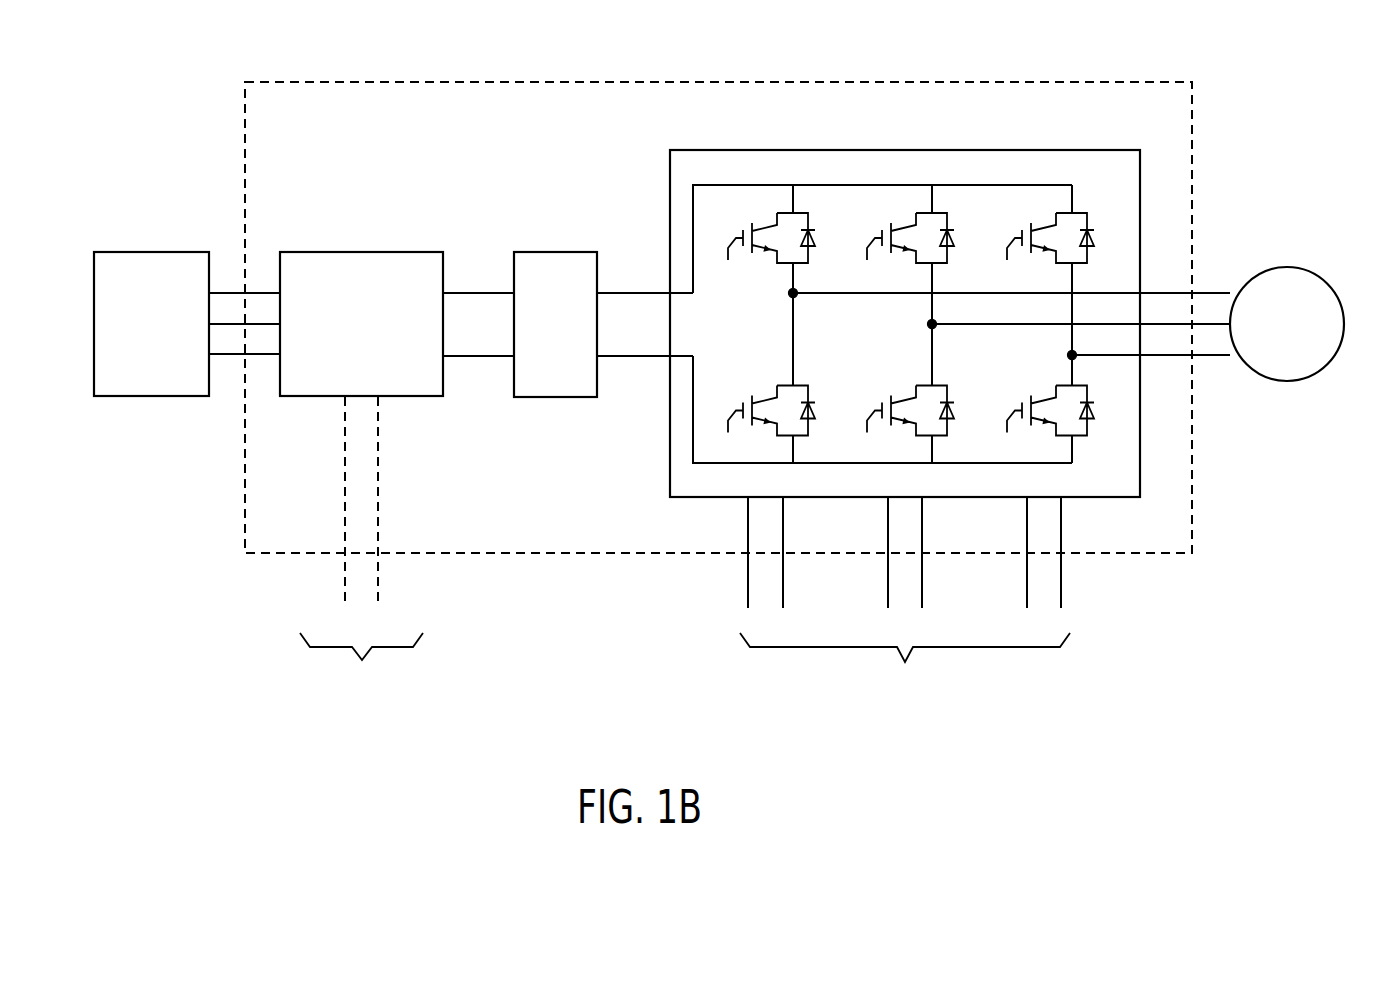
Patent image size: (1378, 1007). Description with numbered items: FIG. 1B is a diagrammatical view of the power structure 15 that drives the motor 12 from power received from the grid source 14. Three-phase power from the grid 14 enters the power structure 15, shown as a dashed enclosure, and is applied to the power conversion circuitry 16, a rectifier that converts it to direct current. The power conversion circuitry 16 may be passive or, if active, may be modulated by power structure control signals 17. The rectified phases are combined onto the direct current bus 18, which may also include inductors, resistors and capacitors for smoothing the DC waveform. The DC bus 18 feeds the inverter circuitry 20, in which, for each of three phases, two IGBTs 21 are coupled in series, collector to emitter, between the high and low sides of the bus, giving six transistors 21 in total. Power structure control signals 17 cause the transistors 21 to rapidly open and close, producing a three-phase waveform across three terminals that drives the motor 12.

The motor 12 is at (1288, 267).
The grid source 14 is at (149, 252).
The power structure 15 is at (1041, 56).
The power conversion circuitry 16 is at (358, 252).
The power structure control signals 17 is at (685, 586).
The direct current bus 18 is at (552, 252).
The inverter circuitry 20 is at (965, 150).
The IGBTs 21 is at (763, 228).